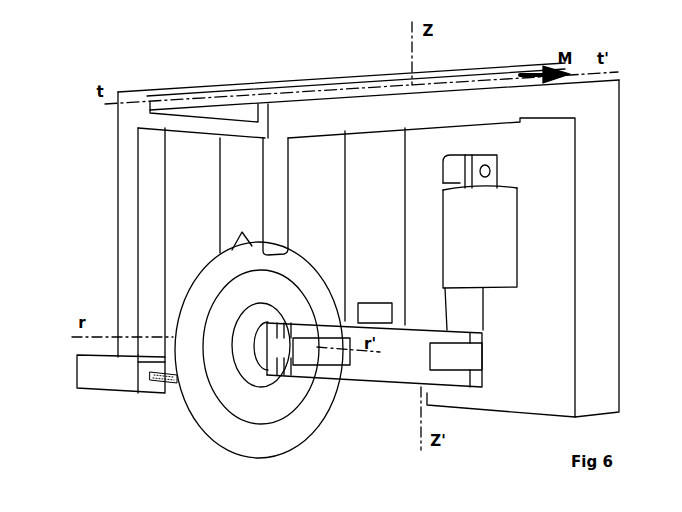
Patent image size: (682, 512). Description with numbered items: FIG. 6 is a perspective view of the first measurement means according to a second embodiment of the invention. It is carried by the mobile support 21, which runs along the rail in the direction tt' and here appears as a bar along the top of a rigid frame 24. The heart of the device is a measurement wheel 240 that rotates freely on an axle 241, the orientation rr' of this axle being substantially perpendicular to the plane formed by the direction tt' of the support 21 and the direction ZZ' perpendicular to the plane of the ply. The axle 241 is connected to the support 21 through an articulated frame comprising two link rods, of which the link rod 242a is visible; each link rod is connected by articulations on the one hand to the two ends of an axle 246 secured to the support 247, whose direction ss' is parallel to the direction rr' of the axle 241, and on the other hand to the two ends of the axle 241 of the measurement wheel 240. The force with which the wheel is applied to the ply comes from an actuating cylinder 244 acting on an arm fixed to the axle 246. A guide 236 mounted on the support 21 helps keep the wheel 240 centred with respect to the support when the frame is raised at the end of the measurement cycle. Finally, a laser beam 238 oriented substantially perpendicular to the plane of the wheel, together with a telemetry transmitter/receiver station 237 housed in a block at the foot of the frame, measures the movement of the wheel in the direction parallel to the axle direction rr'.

The mobile support 21 is at (367, 76).
The frame 24 is at (97, 267).
The guide 236 is at (243, 196).
The telemetry transmitter/receiver station 237 is at (118, 368).
The laser beam 238 is at (153, 378).
The measurement wheel 240 is at (273, 440).
The axle 241 is at (308, 352).
The link rod 242a is at (393, 370).
The actuating cylinder 244 is at (490, 242).
The axle 246 is at (467, 353).
The support 247 is at (380, 157).